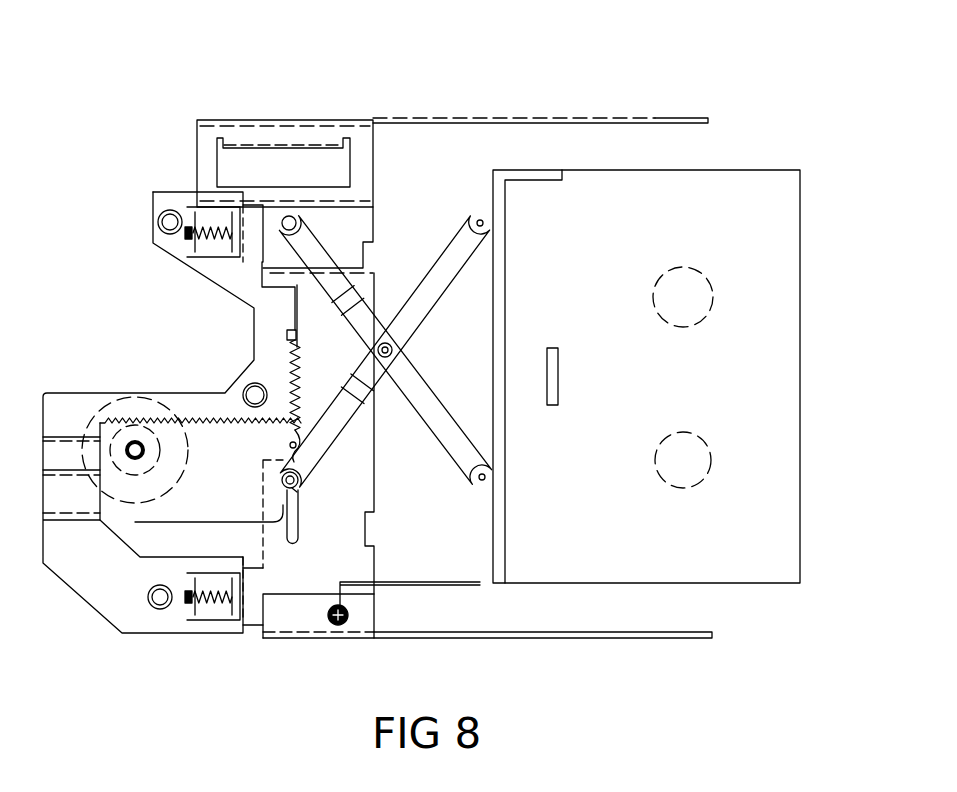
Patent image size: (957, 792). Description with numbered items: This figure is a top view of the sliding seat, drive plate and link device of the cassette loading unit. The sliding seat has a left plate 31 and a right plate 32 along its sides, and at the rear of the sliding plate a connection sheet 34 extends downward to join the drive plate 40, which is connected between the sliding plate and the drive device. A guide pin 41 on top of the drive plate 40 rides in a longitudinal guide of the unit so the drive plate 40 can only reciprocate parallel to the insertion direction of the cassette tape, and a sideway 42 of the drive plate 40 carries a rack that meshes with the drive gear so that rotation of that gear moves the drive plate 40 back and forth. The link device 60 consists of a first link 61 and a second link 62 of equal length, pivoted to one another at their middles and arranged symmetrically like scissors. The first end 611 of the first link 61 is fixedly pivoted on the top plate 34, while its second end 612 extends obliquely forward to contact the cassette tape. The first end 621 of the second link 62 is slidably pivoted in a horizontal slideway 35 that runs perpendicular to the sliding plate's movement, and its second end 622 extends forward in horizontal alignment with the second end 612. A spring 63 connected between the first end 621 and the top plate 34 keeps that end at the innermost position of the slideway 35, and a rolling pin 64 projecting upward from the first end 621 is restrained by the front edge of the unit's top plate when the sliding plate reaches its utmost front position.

The left plate 31 is at (637, 639).
The right plate 32 is at (627, 118).
The connection sheet 34 is at (360, 562).
The horizontal slideway 35 is at (298, 540).
The drive plate 40 is at (95, 580).
The guide pin 41 is at (158, 610).
The sideway 42 is at (207, 432).
The link device 60 is at (378, 351).
The first link 61 is at (420, 385).
The second link 62 is at (446, 248).
The spring 63 is at (290, 362).
The rolling pin 64 is at (297, 490).
The first end of first link 611 is at (289, 215).
The second end of first link 612 is at (492, 470).
The first end of second link 621 is at (298, 474).
The second end of second link 622 is at (486, 222).